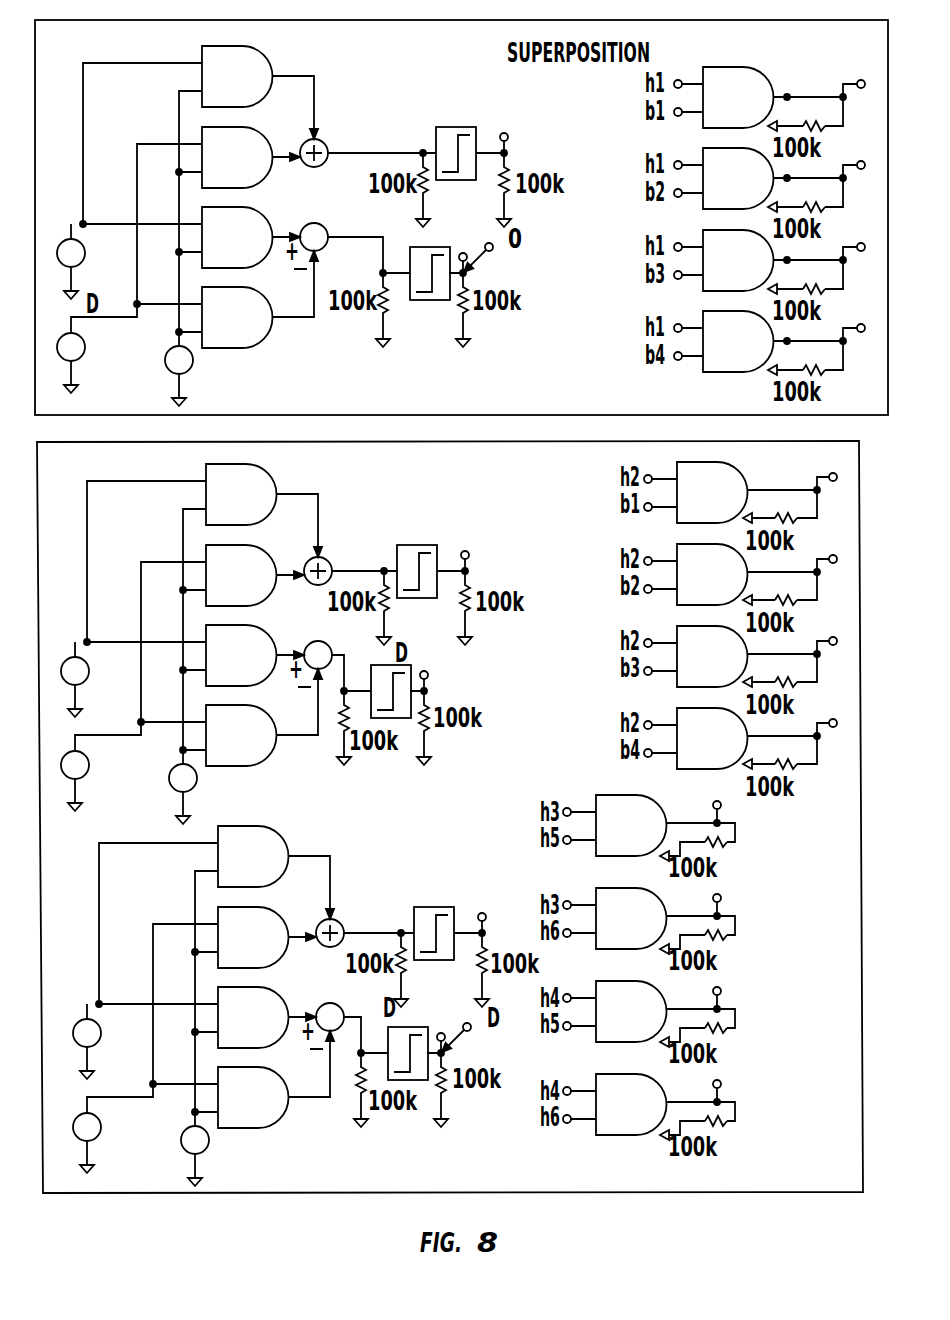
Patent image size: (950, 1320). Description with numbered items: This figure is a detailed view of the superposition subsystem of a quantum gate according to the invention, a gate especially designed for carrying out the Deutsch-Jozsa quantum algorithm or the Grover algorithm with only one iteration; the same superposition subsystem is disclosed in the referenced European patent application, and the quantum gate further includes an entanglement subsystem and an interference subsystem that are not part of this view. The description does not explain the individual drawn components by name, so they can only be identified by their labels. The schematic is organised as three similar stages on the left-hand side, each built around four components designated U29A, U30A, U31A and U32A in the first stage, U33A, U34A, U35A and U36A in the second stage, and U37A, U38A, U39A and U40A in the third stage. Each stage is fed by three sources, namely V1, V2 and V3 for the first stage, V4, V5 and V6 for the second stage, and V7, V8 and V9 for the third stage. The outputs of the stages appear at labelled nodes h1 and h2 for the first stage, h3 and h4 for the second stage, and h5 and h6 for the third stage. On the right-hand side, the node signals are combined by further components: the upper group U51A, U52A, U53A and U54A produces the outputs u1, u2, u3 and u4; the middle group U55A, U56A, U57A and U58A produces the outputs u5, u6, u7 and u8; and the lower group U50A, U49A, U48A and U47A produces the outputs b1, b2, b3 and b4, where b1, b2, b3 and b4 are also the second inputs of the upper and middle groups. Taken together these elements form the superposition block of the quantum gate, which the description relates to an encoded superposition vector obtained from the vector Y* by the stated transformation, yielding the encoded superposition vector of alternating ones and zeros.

The AND gate 7408 U29A is at (237, 75).
The AND gate 7408 U30A is at (237, 156).
The AND gate 7408 U31A is at (237, 236).
The AND gate 7408 U32A is at (237, 316).
The AND gate 7408 U33A is at (241, 493).
The AND gate 7408 U34A is at (241, 574).
The AND gate 7408 U35A is at (241, 654).
The AND gate 7408 U36A is at (241, 734).
The AND gate 7408 U37A is at (253, 855).
The AND gate 7408 U38A is at (253, 936).
The AND gate 7408 U39A is at (253, 1016).
The AND gate 7408 U40A is at (253, 1096).
The AND gate 7408 U47A is at (649, 1106).
The AND gate 7408 U48A is at (649, 1013).
The AND gate 7408 U49A is at (649, 920).
The AND gate 7408 U50A is at (649, 827).
The AND gate 7408 U51A is at (765, 98).
The AND gate 7408 U52A is at (765, 179).
The AND gate 7408 U53A is at (765, 261).
The AND gate 7408 U54A is at (765, 342).
The AND gate 7408 U55A is at (736, 491).
The AND gate 7408 U56A is at (736, 573).
The AND gate 7408 U57A is at (736, 655).
The AND gate 7408 U58A is at (736, 737).
The voltage source V1 is at (83, 263).
The voltage source V2 is at (83, 360).
The voltage source V3 is at (193, 376).
The voltage source V4 is at (87, 681).
The voltage source V5 is at (87, 778).
The voltage source V6 is at (197, 794).
The voltage source V7 is at (99, 1043).
The voltage source V8 is at (99, 1140).
The voltage source V9 is at (209, 1156).
The comparator output node h1 is at (503, 120).
The comparator output node h2 is at (463, 243).
The comparator output node h3 is at (464, 538).
The comparator output node h4 is at (423, 660).
The comparator output node h5 is at (480, 901).
The comparator output node h6 is at (440, 1022).
The output u1 is at (858, 69).
The output u2 is at (858, 150).
The output u3 is at (858, 232).
The output u4 is at (858, 313).
The output u5 is at (832, 464).
The output u6 is at (832, 546).
The output u7 is at (832, 628).
The output u8 is at (832, 710).
The output b1 is at (720, 788).
The output b2 is at (720, 881).
The output b3 is at (720, 974).
The output b4 is at (720, 1067).